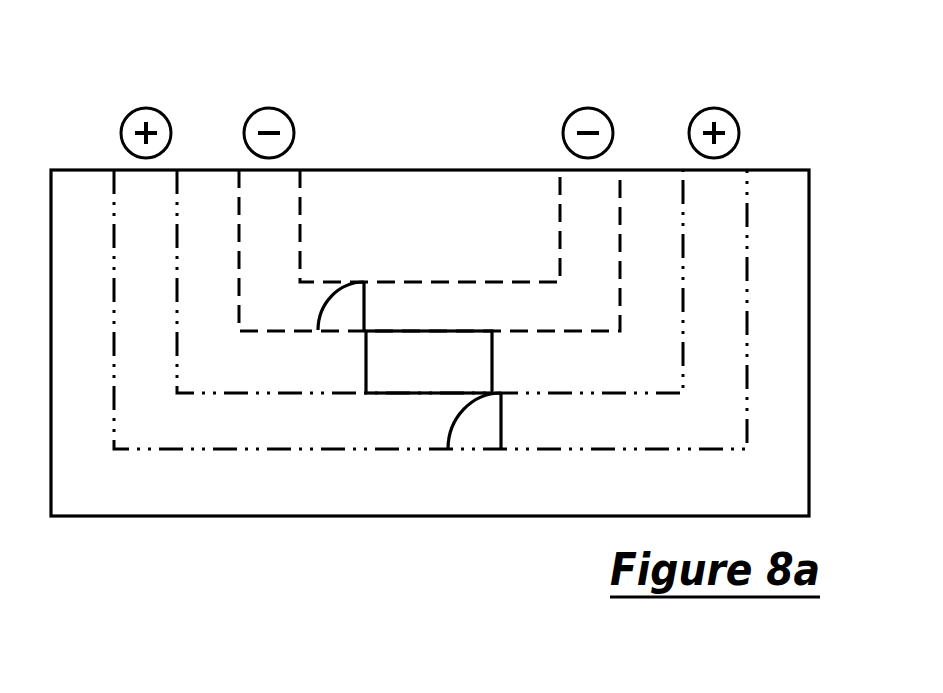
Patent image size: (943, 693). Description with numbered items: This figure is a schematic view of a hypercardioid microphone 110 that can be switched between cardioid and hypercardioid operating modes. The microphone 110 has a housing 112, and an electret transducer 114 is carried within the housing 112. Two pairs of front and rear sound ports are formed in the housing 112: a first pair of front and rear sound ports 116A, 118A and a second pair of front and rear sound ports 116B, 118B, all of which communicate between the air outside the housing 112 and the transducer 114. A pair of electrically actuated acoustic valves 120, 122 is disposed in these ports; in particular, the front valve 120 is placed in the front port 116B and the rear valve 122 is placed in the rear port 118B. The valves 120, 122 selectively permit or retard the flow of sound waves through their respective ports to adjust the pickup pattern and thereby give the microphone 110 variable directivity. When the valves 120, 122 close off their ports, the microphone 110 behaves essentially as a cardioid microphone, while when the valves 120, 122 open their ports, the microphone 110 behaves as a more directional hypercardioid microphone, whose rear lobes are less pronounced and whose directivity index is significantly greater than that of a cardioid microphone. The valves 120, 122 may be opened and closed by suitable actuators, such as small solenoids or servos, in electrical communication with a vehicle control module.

The hypercardioid microphone 110 is at (175, 61).
The housing 112 is at (809, 247).
The electret transducer 114 is at (402, 393).
The front sound port 116A is at (177, 206).
The front sound port 116B is at (683, 264).
The rear sound port 118A is at (560, 235).
The rear sound port 118B is at (240, 228).
The front valve 120 is at (503, 430).
The rear valve 122 is at (367, 298).